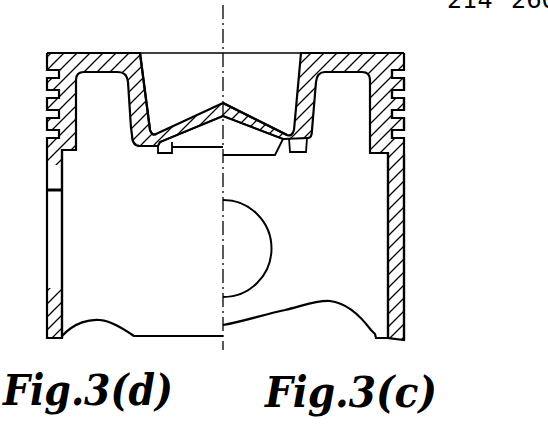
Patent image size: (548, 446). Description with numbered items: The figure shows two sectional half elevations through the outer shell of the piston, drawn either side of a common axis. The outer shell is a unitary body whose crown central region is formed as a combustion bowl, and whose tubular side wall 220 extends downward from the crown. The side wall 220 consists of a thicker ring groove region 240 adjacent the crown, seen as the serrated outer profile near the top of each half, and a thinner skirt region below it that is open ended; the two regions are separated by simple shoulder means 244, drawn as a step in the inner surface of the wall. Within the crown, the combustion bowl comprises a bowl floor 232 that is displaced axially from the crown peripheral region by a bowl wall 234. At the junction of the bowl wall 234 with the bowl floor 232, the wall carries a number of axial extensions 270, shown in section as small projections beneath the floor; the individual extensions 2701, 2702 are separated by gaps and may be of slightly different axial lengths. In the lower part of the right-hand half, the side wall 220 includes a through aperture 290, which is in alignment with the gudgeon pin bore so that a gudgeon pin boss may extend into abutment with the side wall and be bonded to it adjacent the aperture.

In FIG. 3D, the bowl wall 234 is at (143, 90).
In FIG. 3C, the bowl floor 232 is at (247, 112).
In FIG. 3C, the ring groove region 240 is at (423, 109).
In FIG. 3D, the shoulder means 244 is at (65, 156).
In FIG. 3C, the tubular side wall 220 is at (391, 237).
In FIG. 3C, the through aperture 290 is at (247, 268).
In FIG. 3D, the axial extensions 270 is at (167, 184).
In FIG. 3C, the axial extensions 270 is at (299, 182).
In FIG. 3D, the first axial extension 2701 is at (204, 148).
In FIG. 3C, the first axial extension 2701 is at (305, 150).
In FIG. 3D, the second axial extension 2702 is at (165, 153).
In FIG. 3C, the second axial extension 2702 is at (262, 150).